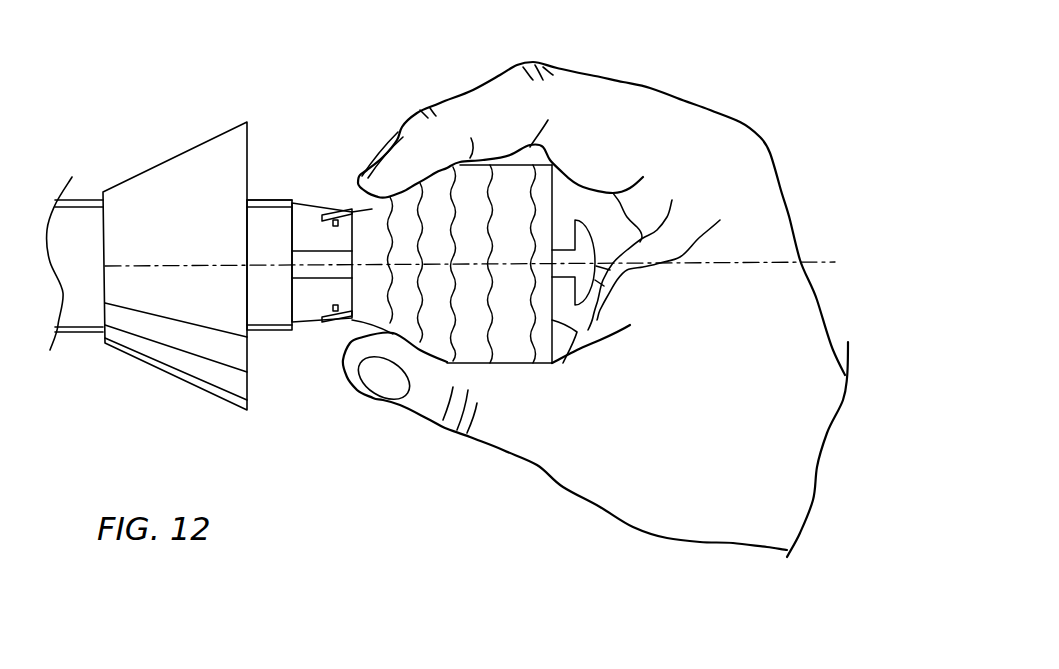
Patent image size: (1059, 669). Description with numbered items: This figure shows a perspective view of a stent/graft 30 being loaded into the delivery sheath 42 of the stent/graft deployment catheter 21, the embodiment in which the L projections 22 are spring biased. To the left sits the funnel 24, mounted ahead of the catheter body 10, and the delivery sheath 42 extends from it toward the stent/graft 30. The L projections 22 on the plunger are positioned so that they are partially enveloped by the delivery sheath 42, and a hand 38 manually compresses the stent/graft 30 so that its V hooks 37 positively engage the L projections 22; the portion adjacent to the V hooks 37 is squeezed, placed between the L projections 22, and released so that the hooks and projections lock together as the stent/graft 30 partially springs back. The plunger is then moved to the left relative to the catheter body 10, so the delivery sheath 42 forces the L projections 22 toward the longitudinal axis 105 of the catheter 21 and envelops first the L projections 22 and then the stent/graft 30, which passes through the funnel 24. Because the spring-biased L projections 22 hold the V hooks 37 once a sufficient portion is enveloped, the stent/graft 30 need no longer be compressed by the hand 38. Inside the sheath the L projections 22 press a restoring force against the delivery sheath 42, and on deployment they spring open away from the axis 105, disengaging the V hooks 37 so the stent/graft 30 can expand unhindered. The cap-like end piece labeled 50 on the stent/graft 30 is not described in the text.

The catheter body 10 is at (260, 197).
The stent/graft deployment catheter 21 is at (267, 345).
The L projections 22 is at (315, 203).
The funnel 24 is at (193, 147).
The stent/graft 30 is at (577, 327).
The V hooks 37 is at (336, 210).
The hand 38 is at (678, 98).
The delivery sheath 42 is at (277, 200).
The end cap 50 is at (577, 327).
The longitudinal axis 105 is at (743, 260).